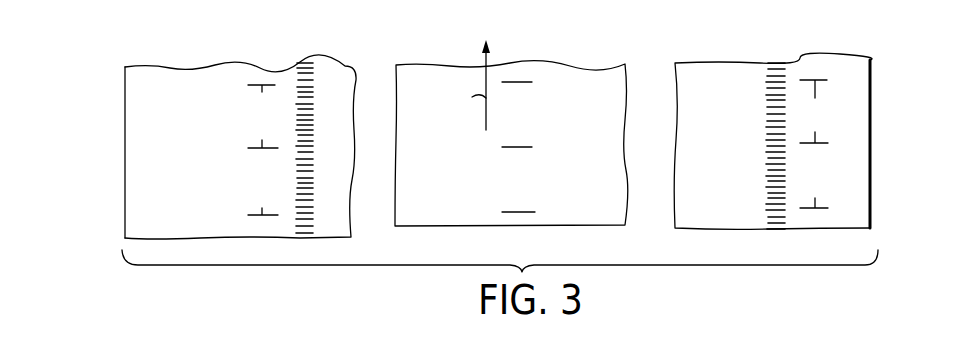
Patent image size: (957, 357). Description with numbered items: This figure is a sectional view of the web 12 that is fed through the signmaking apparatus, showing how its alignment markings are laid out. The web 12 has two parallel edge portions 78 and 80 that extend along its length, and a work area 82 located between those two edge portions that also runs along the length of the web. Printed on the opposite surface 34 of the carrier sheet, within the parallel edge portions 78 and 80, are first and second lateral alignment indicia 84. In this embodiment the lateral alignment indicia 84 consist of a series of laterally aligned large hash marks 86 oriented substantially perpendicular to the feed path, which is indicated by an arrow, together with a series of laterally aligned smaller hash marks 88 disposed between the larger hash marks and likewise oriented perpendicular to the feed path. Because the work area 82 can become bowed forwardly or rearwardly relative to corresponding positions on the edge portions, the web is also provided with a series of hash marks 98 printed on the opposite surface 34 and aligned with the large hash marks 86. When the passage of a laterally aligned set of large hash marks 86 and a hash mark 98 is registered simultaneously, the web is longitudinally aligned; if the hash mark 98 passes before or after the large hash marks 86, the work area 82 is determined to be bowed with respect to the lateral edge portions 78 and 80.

The web 12 is at (868, 50).
The opposite surface 34 is at (190, 147).
The parallel edge portion 78 is at (125, 122).
The parallel edge portion 80 is at (870, 175).
The work area 82 is at (612, 122).
The lateral alignment indicia 84 is at (338, 101).
The large hash mark 86 is at (262, 92).
The smaller hash mark 88 is at (297, 125).
The hash mark 98 is at (520, 82).